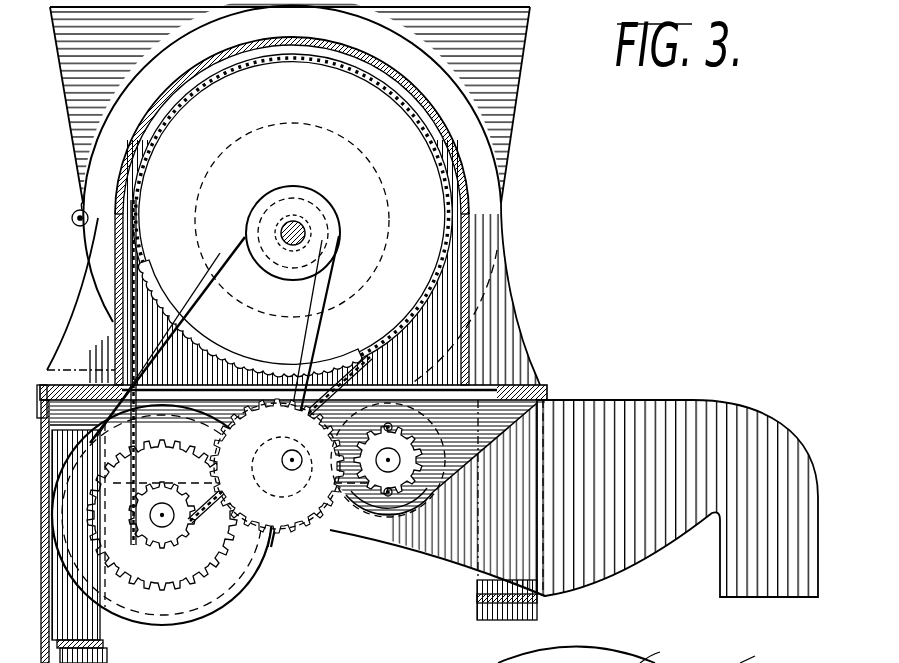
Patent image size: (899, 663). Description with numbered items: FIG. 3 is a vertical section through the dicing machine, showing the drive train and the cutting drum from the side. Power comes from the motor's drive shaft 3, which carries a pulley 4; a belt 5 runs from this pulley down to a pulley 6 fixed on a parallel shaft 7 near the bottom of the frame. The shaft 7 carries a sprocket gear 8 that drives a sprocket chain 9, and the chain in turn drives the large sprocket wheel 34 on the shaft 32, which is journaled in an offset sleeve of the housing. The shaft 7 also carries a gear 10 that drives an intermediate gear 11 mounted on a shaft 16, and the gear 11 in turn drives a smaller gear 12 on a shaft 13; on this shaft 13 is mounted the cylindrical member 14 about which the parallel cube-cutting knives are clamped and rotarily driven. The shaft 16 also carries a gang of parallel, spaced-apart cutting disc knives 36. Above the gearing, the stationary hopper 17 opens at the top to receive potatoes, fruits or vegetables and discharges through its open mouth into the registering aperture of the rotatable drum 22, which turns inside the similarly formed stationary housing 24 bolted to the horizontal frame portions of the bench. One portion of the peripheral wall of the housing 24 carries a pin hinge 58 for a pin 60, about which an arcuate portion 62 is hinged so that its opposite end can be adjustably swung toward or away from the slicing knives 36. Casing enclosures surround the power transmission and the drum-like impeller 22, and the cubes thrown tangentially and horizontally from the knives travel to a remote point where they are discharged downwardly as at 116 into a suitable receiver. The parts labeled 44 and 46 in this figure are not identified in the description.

The stationary hopper 17 is at (500, 97).
The stationary housing 24 is at (496, 128).
The sprocket chain 9 is at (440, 283).
The cutting disc knives 36 is at (273, 550).
The sprocket wheel 34 is at (173, 247).
The pin 60 is at (71, 220).
The pin hinge 58 is at (82, 206).
The cylindrical member 14 is at (433, 421).
The downward discharge 116 is at (773, 443).
The pulley 4 is at (334, 238).
The drive shaft 3 is at (305, 230).
The shaft 32 is at (286, 211).
The belt 5 is at (160, 345).
The arcuate portion 62 is at (163, 376).
The shaft 16 is at (251, 386).
The pulley 6 is at (187, 603).
The sprocket gear 8 is at (250, 557).
The shaft 7 is at (163, 520).
The gear 10 is at (147, 583).
The intermediate gear 11 is at (303, 470).
The smaller gear 12 is at (377, 477).
The shaft 13 is at (397, 467).
The base member 44 is at (578, 662).
The base plate 46 is at (657, 662).
The rotatable drum 22 is at (763, 652).